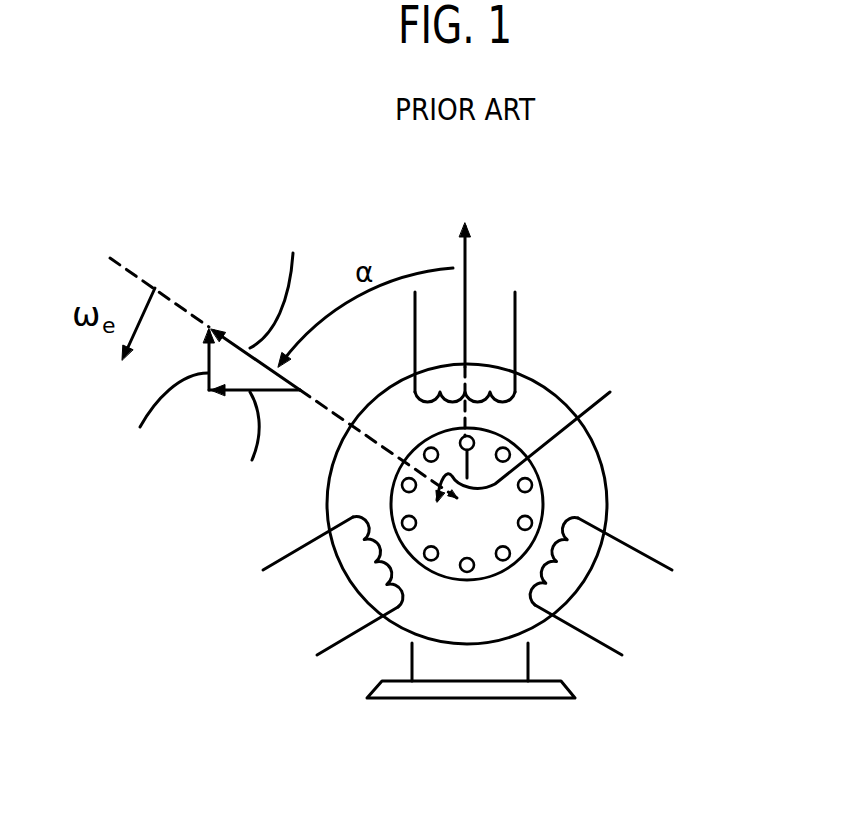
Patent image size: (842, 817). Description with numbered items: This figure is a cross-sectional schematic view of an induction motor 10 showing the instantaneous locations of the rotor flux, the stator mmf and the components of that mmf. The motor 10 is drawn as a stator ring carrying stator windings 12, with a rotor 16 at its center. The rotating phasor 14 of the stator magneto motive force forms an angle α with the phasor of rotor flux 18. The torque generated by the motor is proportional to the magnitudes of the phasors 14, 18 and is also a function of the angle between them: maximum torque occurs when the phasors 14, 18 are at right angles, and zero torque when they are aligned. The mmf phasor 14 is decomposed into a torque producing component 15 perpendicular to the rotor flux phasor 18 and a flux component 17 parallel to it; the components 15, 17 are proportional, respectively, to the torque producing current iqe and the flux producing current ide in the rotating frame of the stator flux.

The induction motor stator 10 is at (533, 378).
The stator windings 12 is at (515, 312).
The rotating phasor of stator magneto motive force 14 is at (236, 346).
The torque producing component 15 is at (278, 391).
The rotor 16 is at (545, 481).
The flux component 17 is at (210, 392).
The phasor of rotor flux 18 is at (466, 292).